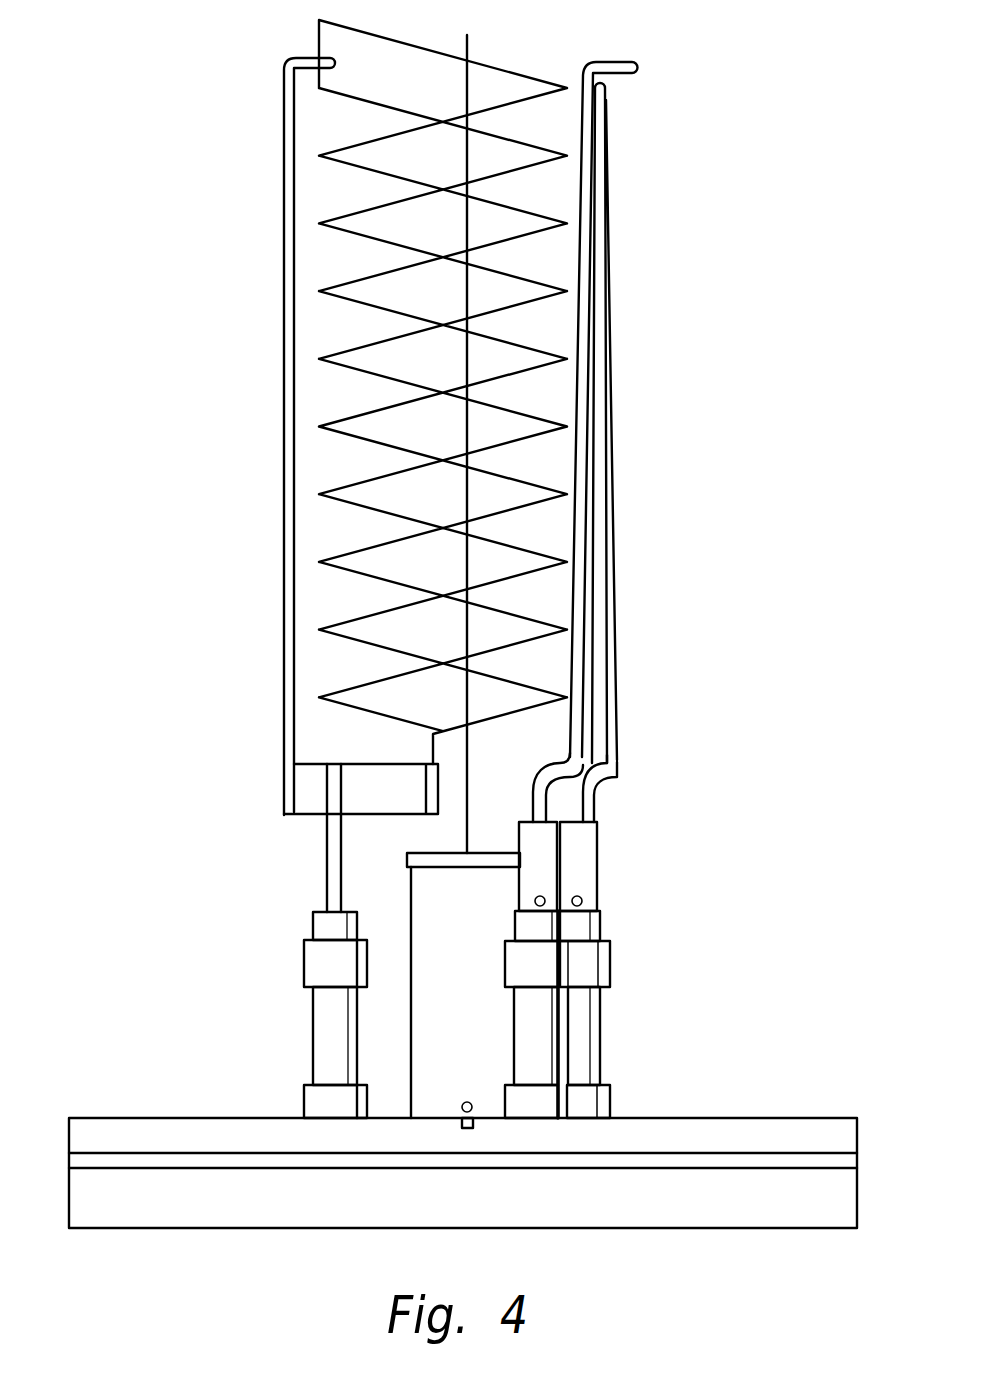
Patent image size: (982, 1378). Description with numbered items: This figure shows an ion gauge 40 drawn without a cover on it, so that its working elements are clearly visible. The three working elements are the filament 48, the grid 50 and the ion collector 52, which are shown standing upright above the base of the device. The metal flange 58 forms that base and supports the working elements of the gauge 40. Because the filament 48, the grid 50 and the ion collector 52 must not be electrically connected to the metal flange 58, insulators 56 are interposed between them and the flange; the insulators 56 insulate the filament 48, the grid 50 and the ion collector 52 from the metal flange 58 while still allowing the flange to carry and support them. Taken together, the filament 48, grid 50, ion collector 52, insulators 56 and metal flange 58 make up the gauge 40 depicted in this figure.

The gauge 40 is at (200, 172).
The filament 48 is at (608, 470).
The grid 50 is at (350, 417).
The ion collector 52 is at (468, 501).
The insulators 56 is at (328, 1053).
The metal flange 58 is at (165, 1117).